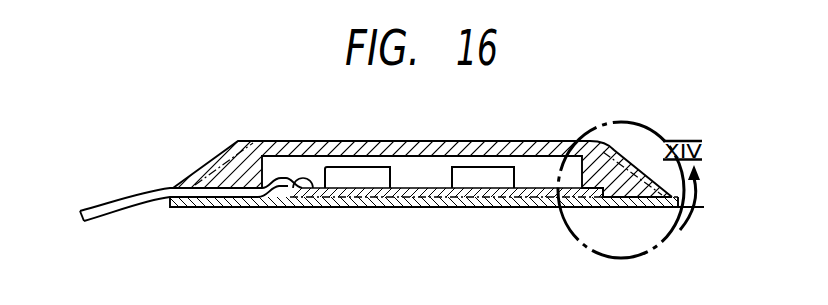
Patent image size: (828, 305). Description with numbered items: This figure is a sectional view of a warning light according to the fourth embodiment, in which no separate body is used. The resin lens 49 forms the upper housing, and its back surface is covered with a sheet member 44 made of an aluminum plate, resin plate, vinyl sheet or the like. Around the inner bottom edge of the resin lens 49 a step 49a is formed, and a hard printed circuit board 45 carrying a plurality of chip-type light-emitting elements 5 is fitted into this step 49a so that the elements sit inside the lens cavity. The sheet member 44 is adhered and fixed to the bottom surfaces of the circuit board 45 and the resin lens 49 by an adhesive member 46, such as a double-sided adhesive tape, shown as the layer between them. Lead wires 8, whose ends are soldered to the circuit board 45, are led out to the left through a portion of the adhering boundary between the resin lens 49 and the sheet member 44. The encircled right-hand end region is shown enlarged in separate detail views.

The chip-type light-emitting elements 5 is at (341, 172).
The lead wires 8 is at (140, 197).
The sheet member 44 is at (427, 205).
The hard printed circuit board 45 is at (330, 190).
The adhesive member 46 is at (512, 200).
The resin lens 49 is at (553, 152).
The step 49a is at (587, 190).